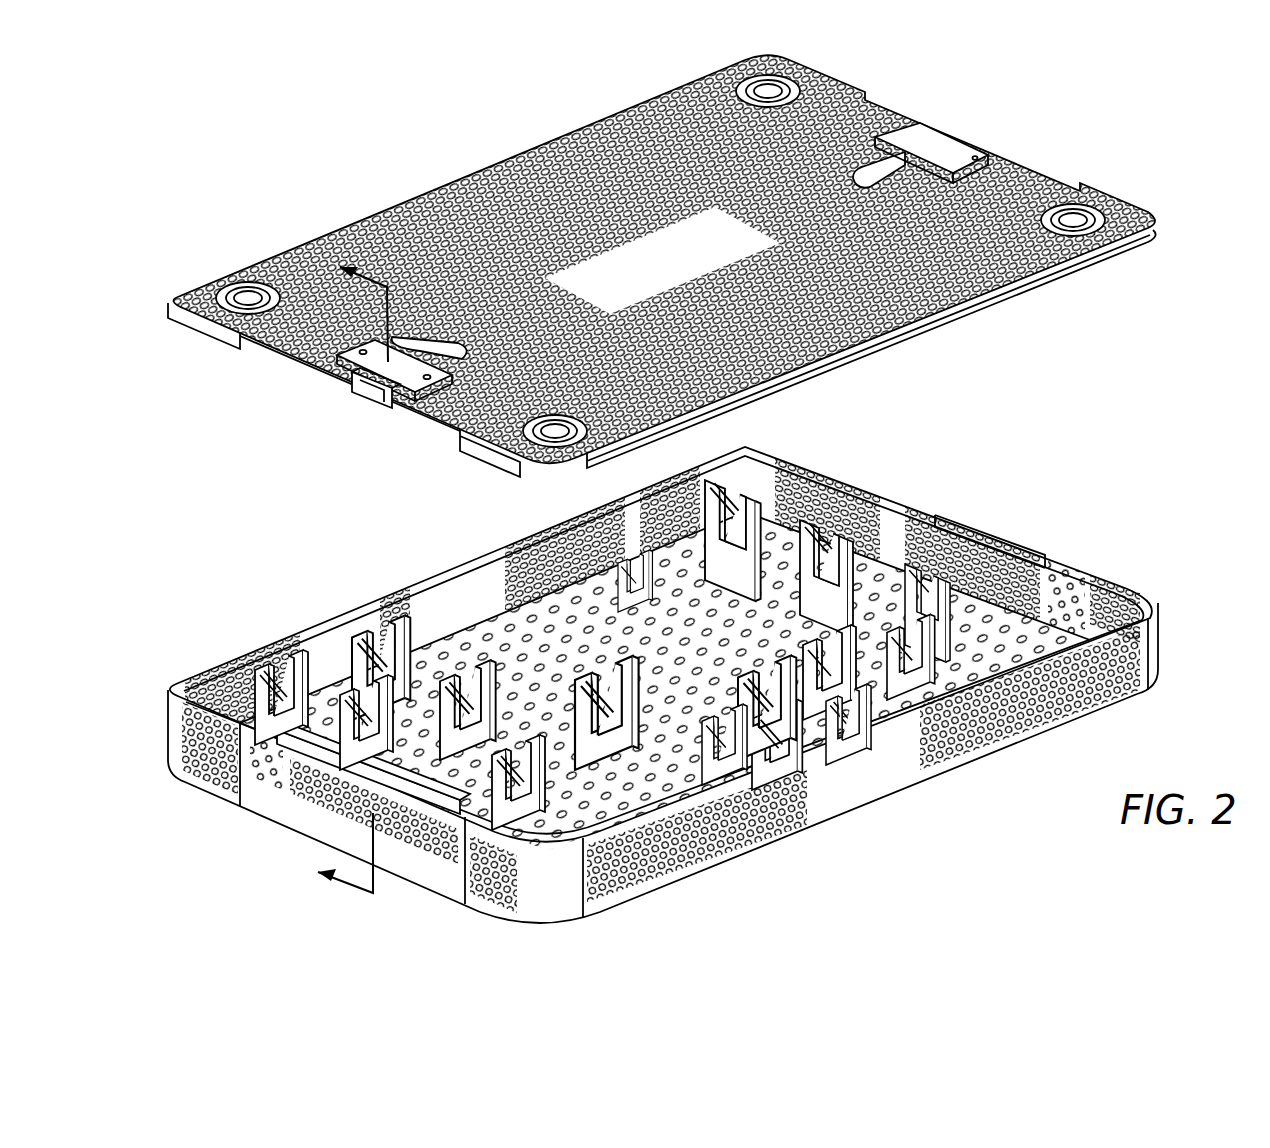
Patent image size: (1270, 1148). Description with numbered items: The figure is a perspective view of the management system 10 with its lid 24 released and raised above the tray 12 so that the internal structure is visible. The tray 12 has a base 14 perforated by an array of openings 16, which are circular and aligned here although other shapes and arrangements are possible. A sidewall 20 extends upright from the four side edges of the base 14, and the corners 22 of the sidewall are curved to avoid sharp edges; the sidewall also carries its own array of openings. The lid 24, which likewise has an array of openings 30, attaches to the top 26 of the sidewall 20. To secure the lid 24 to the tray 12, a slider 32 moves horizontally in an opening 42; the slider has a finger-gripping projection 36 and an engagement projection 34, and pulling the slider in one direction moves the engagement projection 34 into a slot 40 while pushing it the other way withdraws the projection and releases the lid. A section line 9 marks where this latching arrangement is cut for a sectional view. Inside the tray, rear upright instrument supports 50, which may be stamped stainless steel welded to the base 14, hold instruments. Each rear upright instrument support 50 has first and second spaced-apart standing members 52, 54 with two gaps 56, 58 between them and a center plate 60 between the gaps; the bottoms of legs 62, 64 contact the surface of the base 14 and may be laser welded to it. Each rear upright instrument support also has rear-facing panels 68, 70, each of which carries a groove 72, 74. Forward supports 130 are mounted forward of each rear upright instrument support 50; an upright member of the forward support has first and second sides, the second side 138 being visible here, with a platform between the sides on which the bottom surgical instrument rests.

The section line 9- 9 is at (338, 569).
The management system 10 is at (661, 605).
The tray 12 is at (1150, 648).
The base 14 is at (467, 648).
The openings 16 is at (700, 746).
The sidewall 20 is at (858, 791).
The corners 22 is at (560, 905).
The lid 24 is at (1133, 210).
The top 26 is at (1108, 590).
The openings 30 is at (395, 362).
The slider 32 is at (425, 352).
The engagement projection 34 is at (378, 392).
The finger-gripping projection 36 is at (892, 139).
The slot 40 is at (362, 760).
The opening 42 is at (420, 404).
The rear upright instrument support 50 is at (704, 522).
The first standing member 52 is at (792, 520).
The second standing member 54 is at (712, 487).
The gap 56 is at (822, 560).
The gap 58 is at (832, 603).
The center plate 60 is at (746, 495).
The leg 62 is at (690, 560).
The leg 64 is at (942, 577).
The rear-facing panel 68 is at (746, 762).
The rear-facing panel 70 is at (853, 723).
The groove 72 is at (781, 726).
The groove 74 is at (856, 786).
The forward support 130 is at (363, 657).
The second side 138 is at (582, 622).